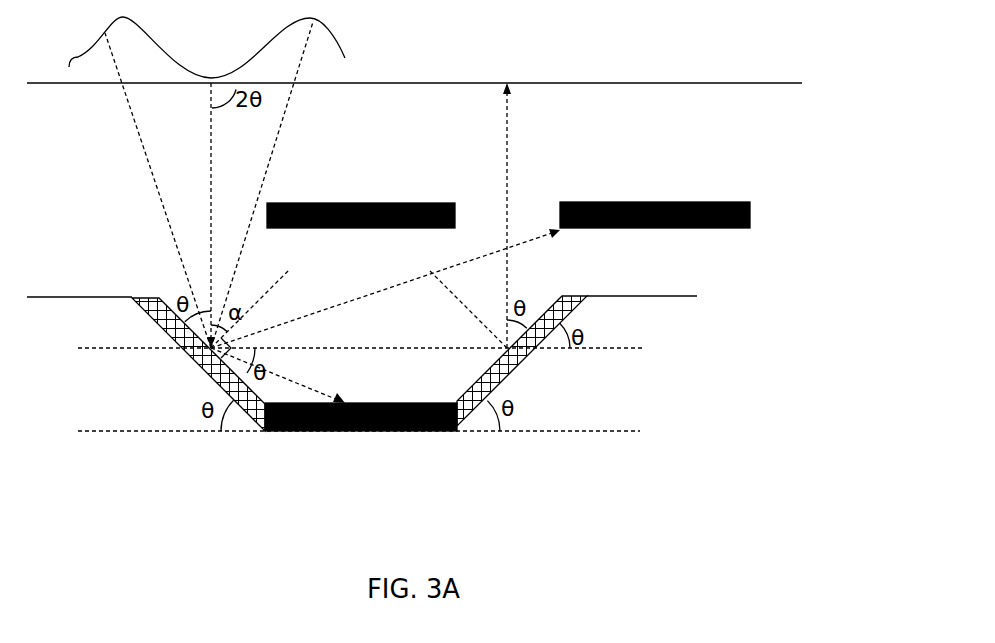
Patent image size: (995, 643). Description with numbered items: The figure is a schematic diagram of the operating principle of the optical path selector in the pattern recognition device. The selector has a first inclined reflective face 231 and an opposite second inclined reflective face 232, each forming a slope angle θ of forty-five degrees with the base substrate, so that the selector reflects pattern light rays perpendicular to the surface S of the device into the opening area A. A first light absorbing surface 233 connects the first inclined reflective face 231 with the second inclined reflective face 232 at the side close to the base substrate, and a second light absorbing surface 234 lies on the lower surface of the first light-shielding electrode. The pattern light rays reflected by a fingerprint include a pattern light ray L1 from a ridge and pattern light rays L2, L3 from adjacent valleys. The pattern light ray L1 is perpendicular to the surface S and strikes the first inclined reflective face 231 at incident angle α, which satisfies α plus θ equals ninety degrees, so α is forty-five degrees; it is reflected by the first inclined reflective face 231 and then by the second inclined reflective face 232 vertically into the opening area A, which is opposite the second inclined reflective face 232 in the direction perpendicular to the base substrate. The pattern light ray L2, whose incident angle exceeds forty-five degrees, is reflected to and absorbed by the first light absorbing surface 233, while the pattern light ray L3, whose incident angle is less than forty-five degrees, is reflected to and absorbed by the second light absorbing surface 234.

The first inclined reflective face 231 is at (198, 363).
The second inclined reflective face 232 is at (518, 365).
The first light absorbing surface 233 is at (373, 432).
The second light absorbing surface 234 is at (670, 202).
The surface of the pattern recognition device S is at (722, 85).
The opening area A is at (523, 202).
The pattern light ray L1 is at (225, 215).
The pattern light ray L2 is at (158, 190).
The pattern light ray L3 is at (262, 185).